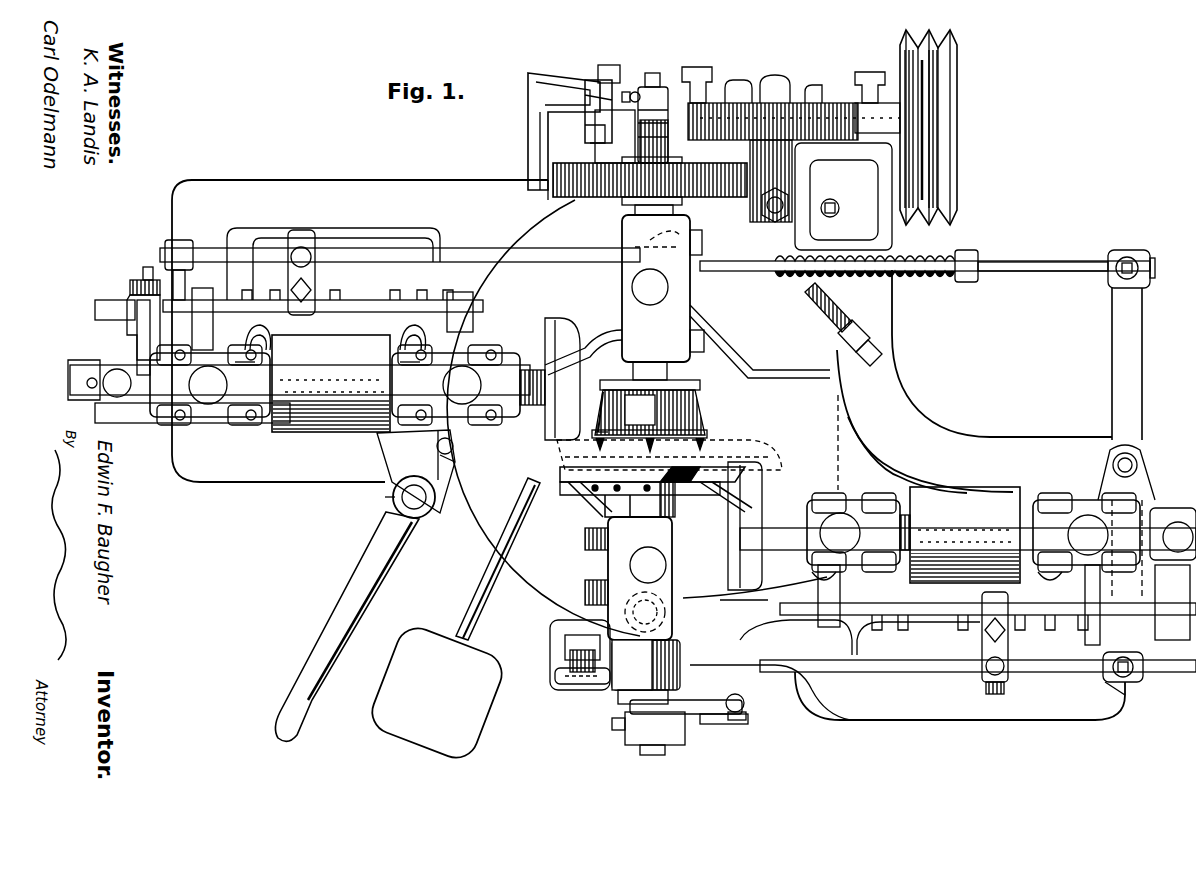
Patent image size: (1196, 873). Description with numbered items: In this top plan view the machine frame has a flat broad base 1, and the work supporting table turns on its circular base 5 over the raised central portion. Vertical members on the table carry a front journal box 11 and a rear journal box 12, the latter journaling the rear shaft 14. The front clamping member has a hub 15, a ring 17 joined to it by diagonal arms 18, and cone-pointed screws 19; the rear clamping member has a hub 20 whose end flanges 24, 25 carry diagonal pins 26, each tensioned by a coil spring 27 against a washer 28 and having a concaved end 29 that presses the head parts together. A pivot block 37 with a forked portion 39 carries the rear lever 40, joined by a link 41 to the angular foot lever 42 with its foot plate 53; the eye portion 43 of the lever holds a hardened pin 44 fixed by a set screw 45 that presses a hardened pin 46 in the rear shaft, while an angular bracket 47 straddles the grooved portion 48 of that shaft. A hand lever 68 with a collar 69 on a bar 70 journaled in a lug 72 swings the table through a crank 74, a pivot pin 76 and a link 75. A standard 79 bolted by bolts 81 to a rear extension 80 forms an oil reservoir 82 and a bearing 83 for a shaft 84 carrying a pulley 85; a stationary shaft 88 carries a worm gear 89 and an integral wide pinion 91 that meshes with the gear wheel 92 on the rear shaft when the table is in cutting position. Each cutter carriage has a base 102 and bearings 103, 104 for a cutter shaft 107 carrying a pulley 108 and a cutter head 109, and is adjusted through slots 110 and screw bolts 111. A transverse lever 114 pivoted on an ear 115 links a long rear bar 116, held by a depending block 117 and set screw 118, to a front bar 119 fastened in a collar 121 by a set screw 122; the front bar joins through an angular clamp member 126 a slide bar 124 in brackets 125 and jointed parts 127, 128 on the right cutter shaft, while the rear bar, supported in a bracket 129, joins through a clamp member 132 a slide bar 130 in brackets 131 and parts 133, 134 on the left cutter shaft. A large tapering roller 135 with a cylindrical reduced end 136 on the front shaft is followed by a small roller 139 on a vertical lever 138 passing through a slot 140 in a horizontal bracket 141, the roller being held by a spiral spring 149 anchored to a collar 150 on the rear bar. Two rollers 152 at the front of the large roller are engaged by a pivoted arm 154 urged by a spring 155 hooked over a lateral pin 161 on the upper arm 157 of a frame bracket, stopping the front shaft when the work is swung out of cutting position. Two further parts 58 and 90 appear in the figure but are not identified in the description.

The frame 1 is at (648, 450).
The circular bed 5 is at (642, 418).
The lower spindle head 11 is at (628, 578).
The upper spindle head 12 is at (663, 297).
The spindle 14 is at (635, 207).
The strut 15 is at (597, 508).
The cross plate 17 is at (580, 470).
The center boss 18 is at (640, 499).
The strut 19 is at (578, 493).
The brush 20 is at (650, 412).
The brush ring 24 is at (708, 420).
The brush plate 25 is at (700, 392).
The prongs 26 is at (706, 444).
The brush edge 27 is at (600, 398).
The brush bottom 28 is at (595, 422).
The table outline 29 is at (625, 450).
The block 37 is at (615, 136).
The slide block 39 is at (590, 80).
The bracket arm 40 is at (563, 93).
The bracket post 41 is at (540, 145).
The pedal lever 42 is at (482, 602).
The screw 43 is at (652, 87).
The bolt head 44 is at (656, 73).
The pivot 45 is at (633, 92).
The oil cup 46 is at (700, 67).
The clamp 47 is at (600, 130).
The pinion 48 is at (668, 142).
The pedal 53 is at (437, 693).
The cap 58 is at (608, 65).
The hand lever 68 is at (340, 624).
The pivot pin 69 is at (375, 497).
The pivot hub 70 is at (414, 497).
The bracket 72 is at (416, 471).
The link 74 is at (434, 455).
The pin hole 75 is at (453, 448).
The link edge 76 is at (460, 465).
The bearing housing 79 is at (825, 178).
The bearing cap 80 is at (833, 195).
The bolt 81 is at (815, 212).
The worm bracket 82 is at (740, 80).
The drive shaft 83 is at (800, 117).
The pulley 84 is at (958, 118).
The pulley groove 85 is at (945, 163).
The worm 88 is at (775, 75).
The oil cup 89 is at (882, 98).
The bracket loop 90 is at (818, 100).
The worm shaft 91 is at (808, 165).
The worm wheel 92 is at (560, 195).
The spindle bar 102 is at (633, 460).
The bearing block 103 is at (646, 458).
The bearing block 104 is at (645, 458).
The coupling 107 is at (395, 378).
The cylinder 108 is at (646, 459).
The bracket plate 109 is at (570, 328).
The clamp 110 is at (250, 338).
The clamp bolt 111 is at (327, 348).
The upright 114 is at (1128, 405).
The pivot lug 115 is at (1138, 470).
The rod 116 is at (1025, 262).
The rod head 117 is at (1140, 254).
The pin 118 is at (1145, 280).
The lower rail 119 is at (903, 672).
The rail head 121 is at (1145, 672).
The pin 122 is at (1140, 685).
The rail 124 is at (935, 615).
The post 125 is at (838, 635).
The tie bracket 126 is at (1008, 645).
The end bearing 127 is at (1178, 510).
The end post 128 is at (1175, 610).
The rail head 129 is at (185, 240).
The rail 130 is at (360, 292).
The post 131 is at (203, 295).
The tie bracket 132 is at (315, 275).
The bracket lever 133 is at (160, 340).
The end post 134 is at (140, 268).
The nut 135 is at (680, 668).
The lock nut 136 is at (622, 702).
The pawl 138 is at (570, 660).
The pin 139 is at (572, 684).
The pawl bracket 140 is at (575, 638).
The frame arm 141 is at (738, 613).
The rack 149 is at (932, 258).
The collar 150 is at (975, 256).
The clamp block 152 is at (640, 730).
The lever arm 154 is at (695, 715).
The roller 155 is at (755, 698).
The lever bar 157 is at (755, 732).
The pin 161 is at (755, 716).